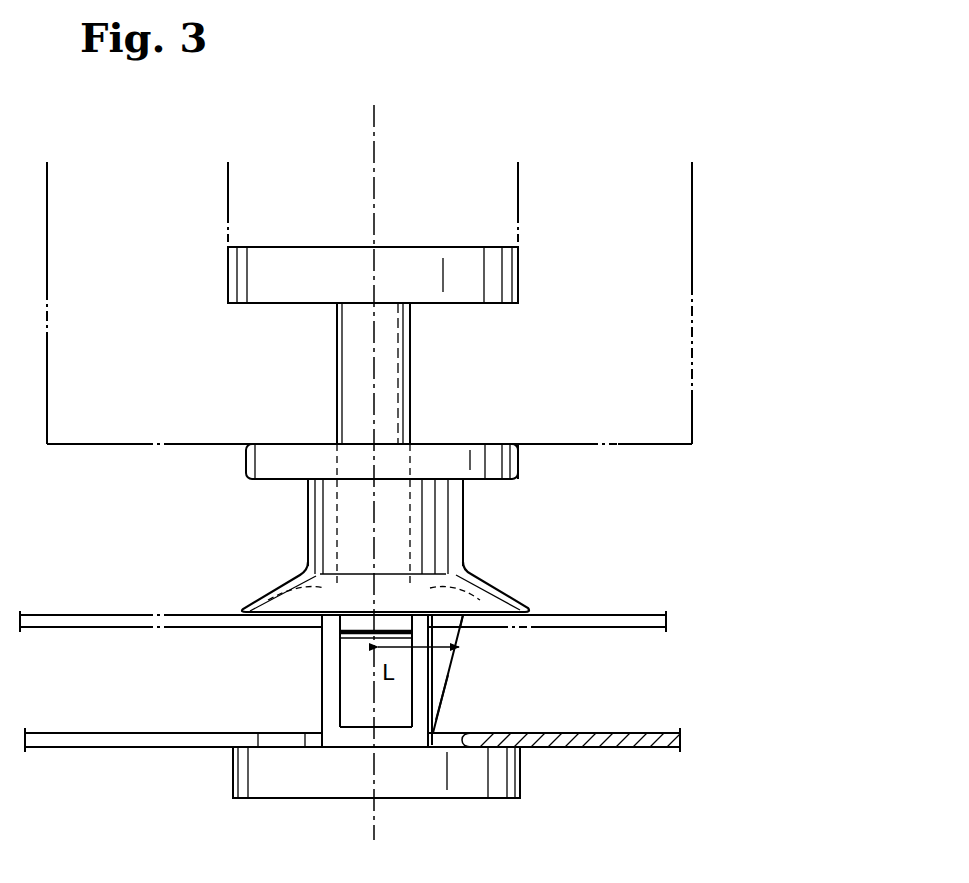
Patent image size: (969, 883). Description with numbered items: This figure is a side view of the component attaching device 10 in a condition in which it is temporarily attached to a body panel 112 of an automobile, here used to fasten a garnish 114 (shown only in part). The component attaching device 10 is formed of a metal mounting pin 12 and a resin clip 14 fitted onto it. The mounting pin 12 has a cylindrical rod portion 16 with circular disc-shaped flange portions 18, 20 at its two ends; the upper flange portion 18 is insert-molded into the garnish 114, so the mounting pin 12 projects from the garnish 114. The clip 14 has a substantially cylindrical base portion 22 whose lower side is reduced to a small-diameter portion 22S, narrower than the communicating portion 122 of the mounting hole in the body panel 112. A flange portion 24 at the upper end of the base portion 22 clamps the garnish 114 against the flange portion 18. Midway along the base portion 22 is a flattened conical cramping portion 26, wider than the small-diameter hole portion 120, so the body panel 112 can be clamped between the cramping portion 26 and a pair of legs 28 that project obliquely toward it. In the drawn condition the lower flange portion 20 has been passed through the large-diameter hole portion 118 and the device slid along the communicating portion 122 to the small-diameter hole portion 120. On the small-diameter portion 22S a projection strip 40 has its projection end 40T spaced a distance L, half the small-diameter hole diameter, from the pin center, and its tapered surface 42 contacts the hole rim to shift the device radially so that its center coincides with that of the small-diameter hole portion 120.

The component attaching device 10 is at (662, 522).
The mounting pin 12 is at (428, 245).
The clip 14 is at (521, 463).
The rod portion 16 is at (337, 380).
The flange portion 18 is at (228, 283).
The flange portion 20 is at (233, 774).
The base portion 22 is at (308, 526).
The small-diameter portion 22S is at (322, 658).
The flange portion 24 is at (246, 466).
The cramping portion 26 is at (272, 598).
The legs 28 is at (350, 680).
The projection strip 40 is at (456, 683).
The projection end 40T is at (468, 635).
The tapered surface 42 is at (440, 708).
The body panel 112 is at (646, 630).
The garnish 114 is at (694, 375).
The large-diameter hole portion 118 is at (148, 733).
The small-diameter hole portion 120 is at (466, 733).
The communicating portion 122 is at (282, 738).